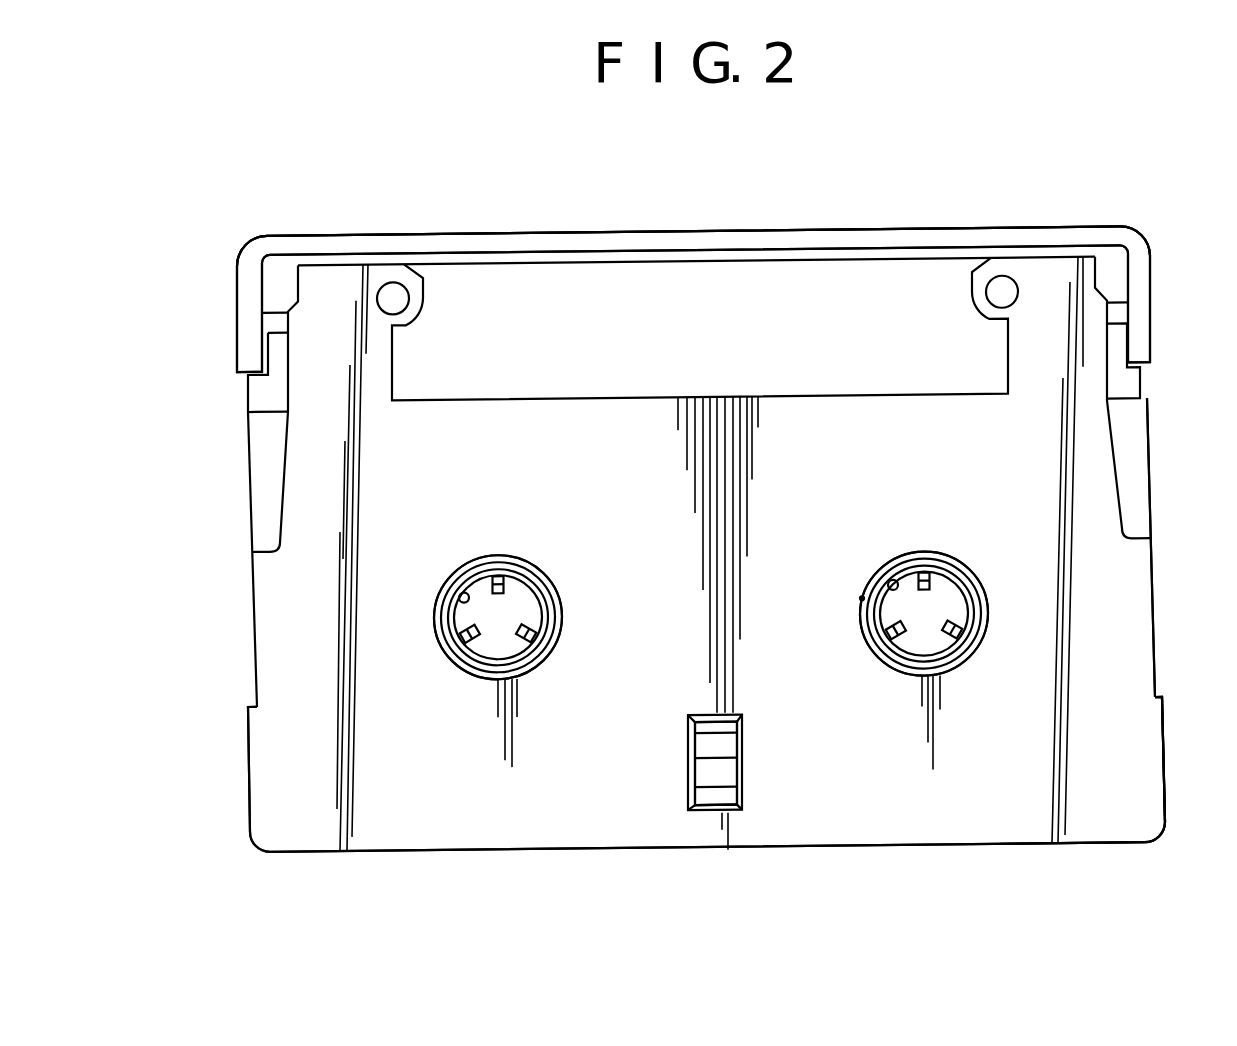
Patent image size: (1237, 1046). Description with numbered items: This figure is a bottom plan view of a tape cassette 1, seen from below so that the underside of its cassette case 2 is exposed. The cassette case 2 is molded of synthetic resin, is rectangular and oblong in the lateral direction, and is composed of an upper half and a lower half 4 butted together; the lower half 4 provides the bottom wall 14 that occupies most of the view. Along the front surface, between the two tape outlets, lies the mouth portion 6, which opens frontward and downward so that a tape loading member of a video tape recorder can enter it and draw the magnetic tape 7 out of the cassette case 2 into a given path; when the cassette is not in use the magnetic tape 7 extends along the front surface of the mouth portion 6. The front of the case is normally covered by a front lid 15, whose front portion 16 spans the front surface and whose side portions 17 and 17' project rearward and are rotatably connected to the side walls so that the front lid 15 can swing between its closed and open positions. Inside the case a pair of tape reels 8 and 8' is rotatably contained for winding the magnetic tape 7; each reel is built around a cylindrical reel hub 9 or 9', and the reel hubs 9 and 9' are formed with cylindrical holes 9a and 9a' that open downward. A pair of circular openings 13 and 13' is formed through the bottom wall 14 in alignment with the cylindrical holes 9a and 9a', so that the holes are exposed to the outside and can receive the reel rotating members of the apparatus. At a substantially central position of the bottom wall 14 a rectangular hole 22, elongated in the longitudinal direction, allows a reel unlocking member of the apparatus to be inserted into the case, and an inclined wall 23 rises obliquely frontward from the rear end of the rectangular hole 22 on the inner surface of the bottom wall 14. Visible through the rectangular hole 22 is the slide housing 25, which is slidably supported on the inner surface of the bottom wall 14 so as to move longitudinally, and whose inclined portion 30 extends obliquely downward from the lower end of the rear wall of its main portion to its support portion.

The tape cassette 1 is at (1100, 205).
The cassette case 2 is at (1155, 622).
The lower half 4 is at (1123, 665).
The mouth portion 6 is at (731, 314).
The magnetic tape 7 is at (840, 264).
The tape reel 8 is at (932, 603).
The tape reel 8' is at (509, 605).
The reel hub 9 is at (951, 613).
The reel hub 9' is at (530, 617).
The cylindrical hole 9a is at (859, 557).
The cylindrical hole 9a' is at (438, 566).
The circular opening 13 is at (895, 661).
The circular opening 13' is at (532, 661).
The bottom wall 14 is at (1110, 735).
The front lid 15 is at (638, 234).
The front portion 16 is at (538, 244).
The side portion 17 is at (1164, 484).
The side portion 17' is at (233, 495).
The rectangular hole 22 is at (702, 742).
The inclined wall 23 is at (718, 802).
The slide housing 25 is at (735, 747).
The inclined portion 30 is at (722, 757).